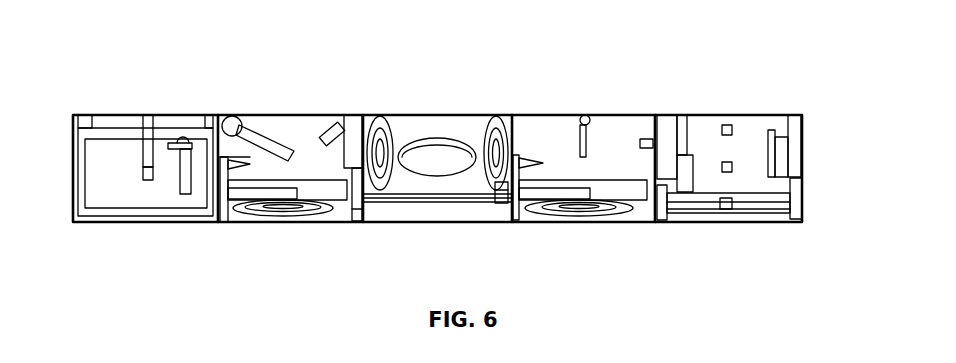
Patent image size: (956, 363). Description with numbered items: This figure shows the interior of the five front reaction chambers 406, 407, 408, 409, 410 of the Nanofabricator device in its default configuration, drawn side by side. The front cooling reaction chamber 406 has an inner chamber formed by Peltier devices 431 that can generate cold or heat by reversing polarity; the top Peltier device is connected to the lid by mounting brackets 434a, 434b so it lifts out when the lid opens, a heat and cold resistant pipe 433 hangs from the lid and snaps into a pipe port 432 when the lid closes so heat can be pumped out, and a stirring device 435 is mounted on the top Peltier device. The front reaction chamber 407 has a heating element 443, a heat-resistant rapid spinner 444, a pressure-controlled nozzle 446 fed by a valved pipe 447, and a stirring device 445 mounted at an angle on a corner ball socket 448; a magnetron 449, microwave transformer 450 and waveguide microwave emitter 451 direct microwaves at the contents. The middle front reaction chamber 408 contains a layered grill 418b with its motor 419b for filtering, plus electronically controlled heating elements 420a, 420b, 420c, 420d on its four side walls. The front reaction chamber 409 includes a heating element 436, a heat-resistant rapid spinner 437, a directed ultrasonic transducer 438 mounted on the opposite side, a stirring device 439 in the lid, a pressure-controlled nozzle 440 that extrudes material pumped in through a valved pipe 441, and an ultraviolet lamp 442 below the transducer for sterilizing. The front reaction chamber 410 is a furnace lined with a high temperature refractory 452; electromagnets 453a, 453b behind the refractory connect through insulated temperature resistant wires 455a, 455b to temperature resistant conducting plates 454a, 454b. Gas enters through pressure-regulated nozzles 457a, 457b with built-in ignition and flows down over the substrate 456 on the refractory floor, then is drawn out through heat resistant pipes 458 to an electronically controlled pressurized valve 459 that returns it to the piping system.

The front cooling reaction chamber 406 is at (131, 178).
The front reaction chamber 407 is at (302, 174).
The middle front reaction chamber 408 is at (423, 120).
The front reaction chamber 409 is at (597, 174).
The front reaction chamber 410 is at (735, 163).
The layered grill 418b is at (398, 203).
The motor 419b is at (502, 203).
The heating element 420a is at (383, 130).
The heating element 420b is at (485, 163).
The heating element 420c is at (465, 158).
The heating element 420d is at (442, 143).
The Peltier devices 431 is at (83, 188).
The pipe port 432 is at (143, 177).
The pipe 433 is at (148, 125).
The mounting bracket 434a is at (88, 122).
The mounting bracket 434b is at (200, 122).
The stirring device 435 is at (183, 192).
The heating element 436 is at (610, 212).
The heat-resistant rapid spinner 437 is at (595, 188).
The directed ultrasonic transducer 438 is at (652, 120).
The stirring device 439 is at (582, 118).
The pressure-controlled nozzle 440 is at (523, 157).
The valved pipe 441 is at (550, 192).
The ultraviolet lamp 442 is at (643, 140).
The heating element 443 is at (300, 217).
The heat-resistant rapid spinner 444 is at (333, 193).
The stirring device 445 is at (268, 143).
The pressure-controlled nozzle 446 is at (228, 217).
The valved pipe 447 is at (258, 192).
The corner ball socket 448 is at (232, 124).
The magnetron 449 is at (353, 133).
The microwave transformer 450 is at (357, 222).
The waveguide microwave emitter 451 is at (332, 130).
The high temperature refractory 452 is at (665, 207).
The electromagnet 453a is at (667, 148).
The electromagnet 453b is at (795, 163).
The temperature resistant conducting plate 454a is at (695, 175).
The temperature resistant conducting plate 454b is at (773, 137).
The insulated temperature resistant wire 455a is at (681, 155).
The insulated temperature resistant wire 455b is at (778, 152).
The substrate 456 is at (747, 212).
The pressure-regulated nozzle 457a is at (728, 128).
The pressure-regulated nozzle 457b is at (730, 168).
The heat resistant pipes 458 is at (772, 203).
The pressurized valve 459 is at (728, 203).